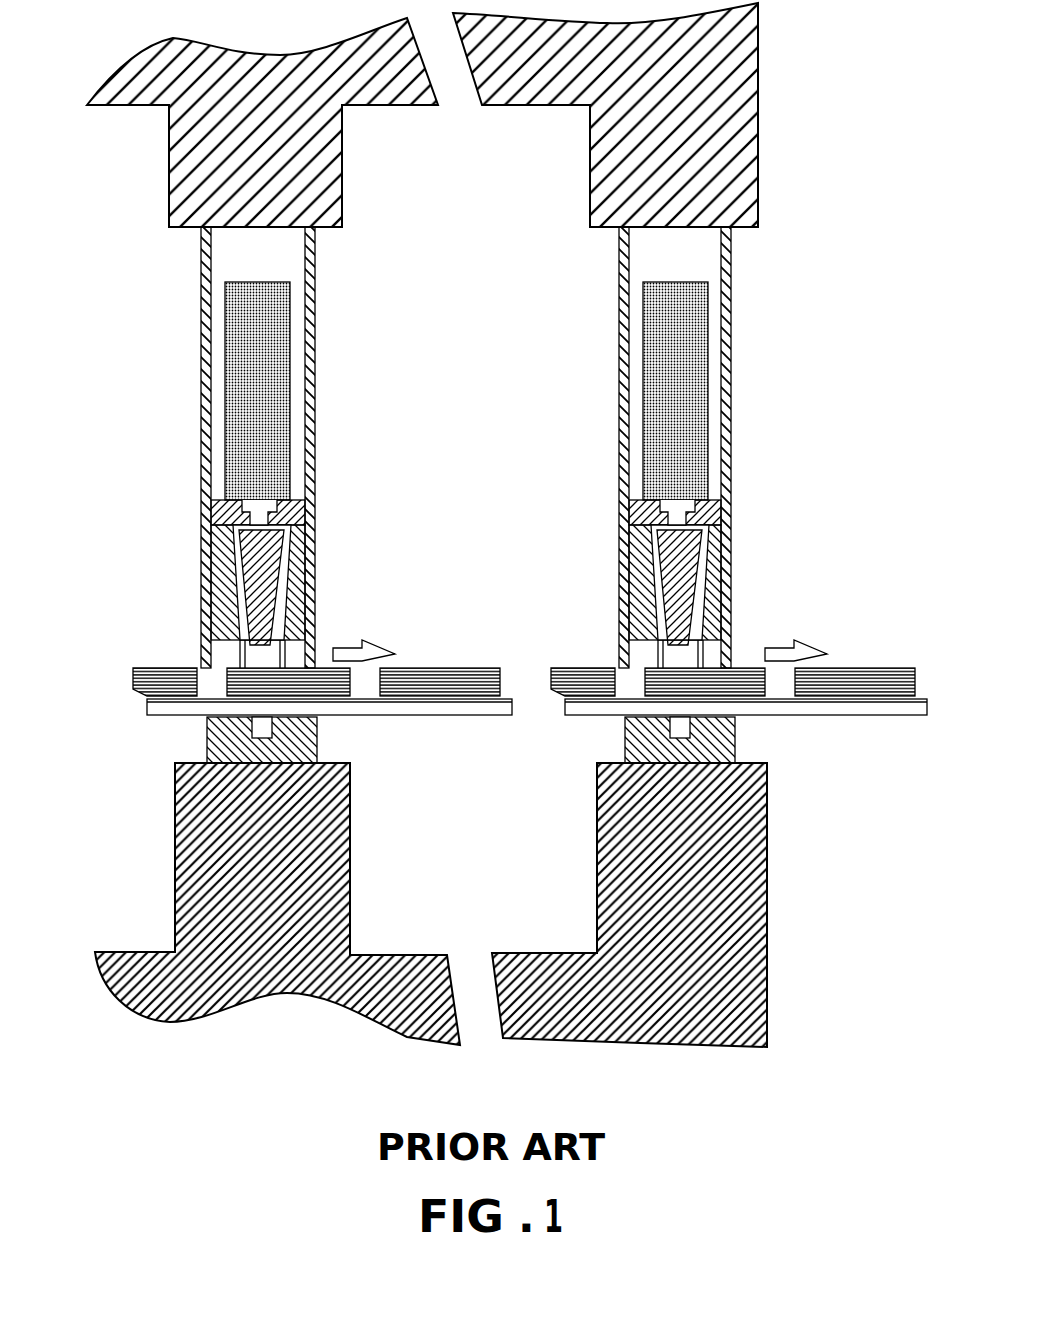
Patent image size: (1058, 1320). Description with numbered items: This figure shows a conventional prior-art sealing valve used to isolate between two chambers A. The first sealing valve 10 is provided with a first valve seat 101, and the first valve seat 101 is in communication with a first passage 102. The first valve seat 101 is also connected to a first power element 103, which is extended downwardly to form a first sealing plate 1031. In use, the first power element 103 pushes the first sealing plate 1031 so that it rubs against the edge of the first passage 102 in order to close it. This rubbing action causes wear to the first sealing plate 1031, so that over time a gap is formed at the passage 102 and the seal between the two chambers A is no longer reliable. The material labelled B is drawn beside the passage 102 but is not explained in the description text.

The first sealing valve 10 is at (206, 455).
The first valve seat 101 is at (212, 552).
The first passage 102 is at (220, 662).
The first power element 103 is at (230, 410).
The first sealing plate 1031 is at (278, 593).
The chambers A is at (395, 267).
The workpiece material B is at (443, 673).